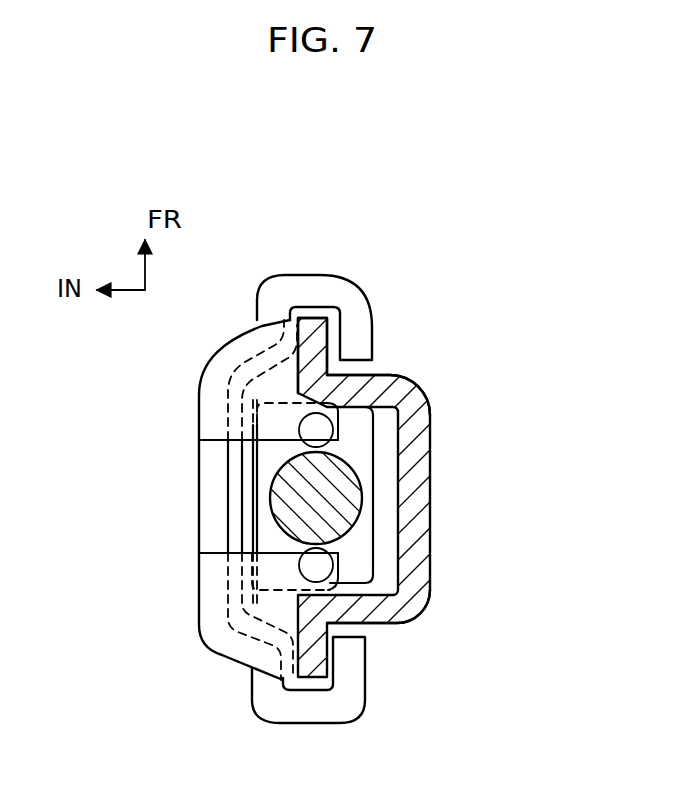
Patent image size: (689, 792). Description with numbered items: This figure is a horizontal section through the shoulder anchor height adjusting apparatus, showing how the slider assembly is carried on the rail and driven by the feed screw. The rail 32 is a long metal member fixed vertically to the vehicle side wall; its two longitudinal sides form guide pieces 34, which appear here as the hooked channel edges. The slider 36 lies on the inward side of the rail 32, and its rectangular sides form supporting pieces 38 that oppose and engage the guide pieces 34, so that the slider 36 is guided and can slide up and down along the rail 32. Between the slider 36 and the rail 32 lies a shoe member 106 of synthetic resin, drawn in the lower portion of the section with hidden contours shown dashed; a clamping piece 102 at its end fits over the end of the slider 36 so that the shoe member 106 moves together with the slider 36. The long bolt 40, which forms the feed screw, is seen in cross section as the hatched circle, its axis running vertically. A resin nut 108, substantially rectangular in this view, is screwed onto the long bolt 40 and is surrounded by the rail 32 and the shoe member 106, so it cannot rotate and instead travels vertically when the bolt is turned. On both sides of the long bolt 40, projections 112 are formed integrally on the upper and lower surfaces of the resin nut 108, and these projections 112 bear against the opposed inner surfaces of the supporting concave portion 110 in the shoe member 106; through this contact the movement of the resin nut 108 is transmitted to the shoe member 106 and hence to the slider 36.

The rail 32 is at (437, 401).
The guide piece 34 is at (320, 337).
The slider 36 is at (197, 504).
The supporting piece 38 is at (303, 281).
The long bolt 40 is at (342, 497).
The clamping piece 102 is at (213, 412).
The shoe member 106 is at (278, 440).
The resin nut 108 is at (360, 455).
The supporting concave portion 110 is at (290, 433).
The projection 112 is at (360, 388).